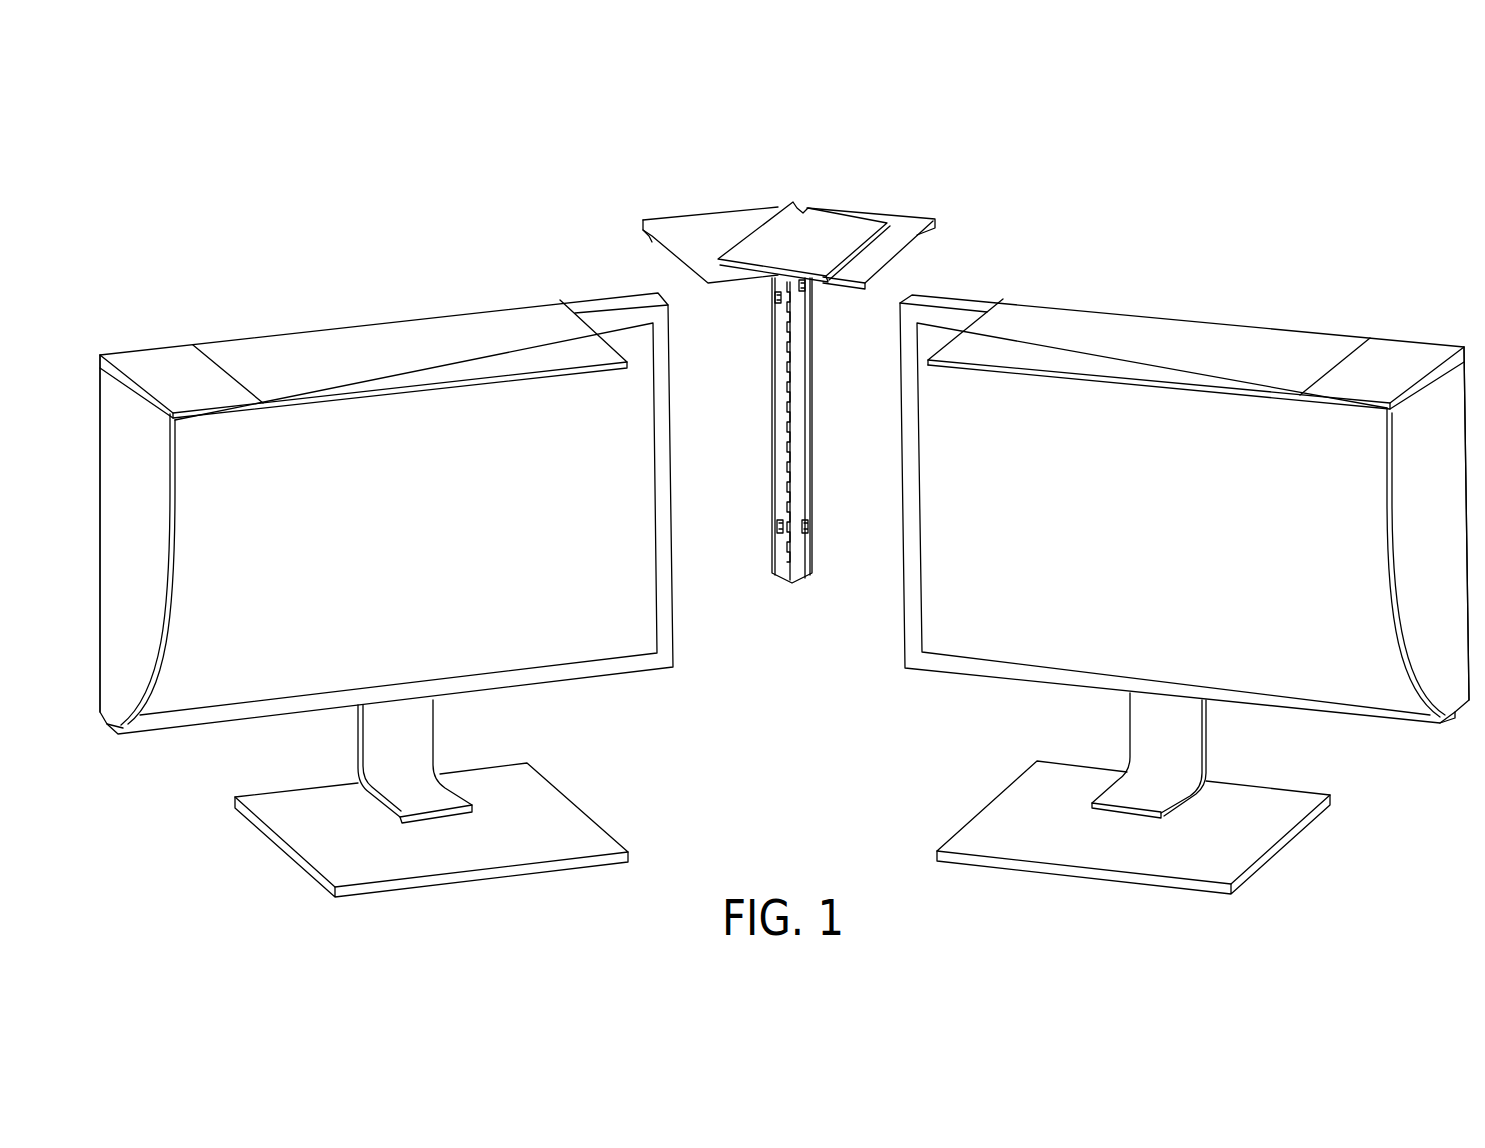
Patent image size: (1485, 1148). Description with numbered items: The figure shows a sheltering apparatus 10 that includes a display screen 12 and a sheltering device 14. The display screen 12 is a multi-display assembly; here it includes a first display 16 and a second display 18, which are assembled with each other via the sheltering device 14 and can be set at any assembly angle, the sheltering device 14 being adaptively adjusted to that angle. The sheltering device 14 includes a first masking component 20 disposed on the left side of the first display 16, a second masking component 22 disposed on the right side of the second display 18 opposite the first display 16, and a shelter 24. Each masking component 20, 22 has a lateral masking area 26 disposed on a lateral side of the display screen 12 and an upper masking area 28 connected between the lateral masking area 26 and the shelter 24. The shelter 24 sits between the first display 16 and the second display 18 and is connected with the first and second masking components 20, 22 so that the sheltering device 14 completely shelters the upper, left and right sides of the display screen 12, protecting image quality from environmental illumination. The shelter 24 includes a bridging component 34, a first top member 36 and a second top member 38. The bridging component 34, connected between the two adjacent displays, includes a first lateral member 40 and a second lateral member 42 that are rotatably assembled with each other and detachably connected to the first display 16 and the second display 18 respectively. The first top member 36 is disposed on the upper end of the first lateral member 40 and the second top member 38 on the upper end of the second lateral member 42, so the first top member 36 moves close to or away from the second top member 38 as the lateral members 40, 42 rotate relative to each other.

The sheltering apparatus 10 is at (1357, 158).
The display screen 12 is at (784, 595).
The sheltering device 14 is at (1121, 120).
The first display 16 is at (220, 647).
The second display 18 is at (1357, 647).
The first masking component 20 is at (567, 165).
The second masking component 22 is at (1203, 165).
The shelter 24 is at (775, 188).
The lateral masking area 26 is at (137, 453).
The upper masking area 28 is at (518, 333).
The bridging component 34 is at (737, 660).
The first top member 36 is at (716, 232).
The second top member 38 is at (842, 232).
The first lateral member 40 is at (773, 560).
The second lateral member 42 is at (812, 560).